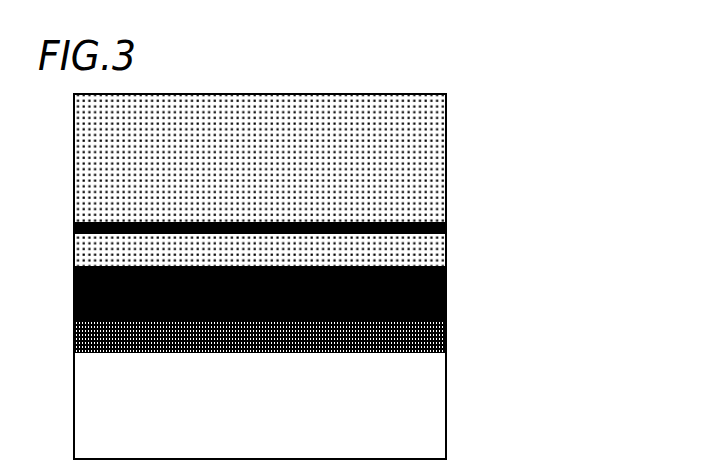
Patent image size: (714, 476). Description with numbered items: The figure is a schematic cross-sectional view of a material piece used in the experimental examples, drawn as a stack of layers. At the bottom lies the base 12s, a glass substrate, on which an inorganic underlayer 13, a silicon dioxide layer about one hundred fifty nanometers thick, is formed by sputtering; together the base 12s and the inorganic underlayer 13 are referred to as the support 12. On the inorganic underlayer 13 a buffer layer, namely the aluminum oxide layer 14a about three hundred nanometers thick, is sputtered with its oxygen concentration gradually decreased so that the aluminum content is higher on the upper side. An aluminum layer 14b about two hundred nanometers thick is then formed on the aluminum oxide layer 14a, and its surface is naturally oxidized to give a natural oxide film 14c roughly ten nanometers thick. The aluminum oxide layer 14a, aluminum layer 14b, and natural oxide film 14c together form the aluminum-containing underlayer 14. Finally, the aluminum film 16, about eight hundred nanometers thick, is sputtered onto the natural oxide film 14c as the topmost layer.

The aluminum film 16 is at (432, 132).
The aluminum-containing underlayer 14 is at (348, 258).
The natural oxide film 14c is at (438, 217).
The aluminum layer 14b is at (435, 243).
The aluminum oxide layer 14a is at (323, 293).
The inorganic underlayer 13 is at (435, 327).
The support 12 is at (350, 385).
The base 12s is at (432, 405).